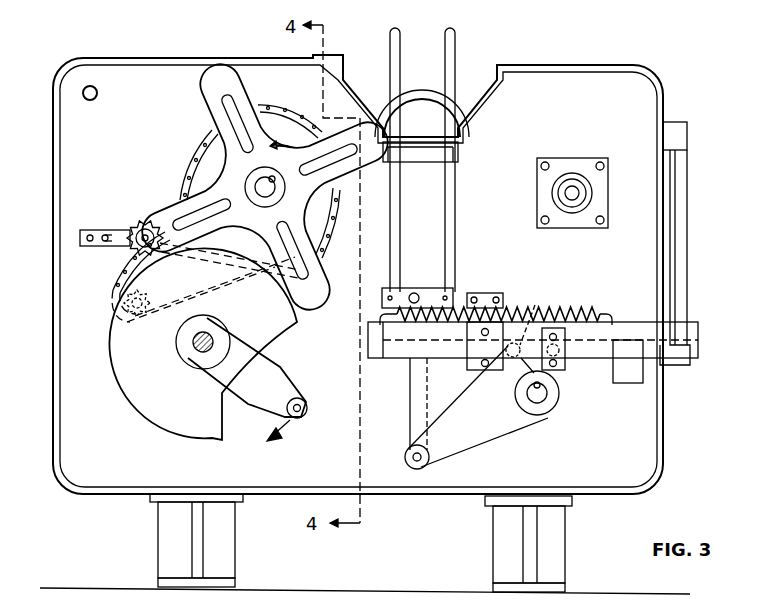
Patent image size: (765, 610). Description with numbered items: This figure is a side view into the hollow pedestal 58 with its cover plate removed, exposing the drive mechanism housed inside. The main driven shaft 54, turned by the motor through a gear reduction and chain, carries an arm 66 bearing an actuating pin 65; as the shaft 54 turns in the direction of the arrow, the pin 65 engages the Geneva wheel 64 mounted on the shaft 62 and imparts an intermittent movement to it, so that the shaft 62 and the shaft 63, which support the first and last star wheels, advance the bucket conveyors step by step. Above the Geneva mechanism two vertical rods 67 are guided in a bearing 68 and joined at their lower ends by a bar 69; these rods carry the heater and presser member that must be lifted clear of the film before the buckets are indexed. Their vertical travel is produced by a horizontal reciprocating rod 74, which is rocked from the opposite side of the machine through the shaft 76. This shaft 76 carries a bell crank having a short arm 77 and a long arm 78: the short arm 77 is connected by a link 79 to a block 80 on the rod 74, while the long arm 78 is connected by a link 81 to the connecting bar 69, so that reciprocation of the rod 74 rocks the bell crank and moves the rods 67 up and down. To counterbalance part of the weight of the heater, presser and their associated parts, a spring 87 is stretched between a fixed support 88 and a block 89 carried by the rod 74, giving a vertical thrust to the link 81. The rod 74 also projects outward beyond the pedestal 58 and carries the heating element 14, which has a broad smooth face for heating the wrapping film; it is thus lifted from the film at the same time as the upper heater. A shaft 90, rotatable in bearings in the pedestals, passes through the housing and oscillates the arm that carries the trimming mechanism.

The heating element 14 is at (677, 140).
The shaft 54 is at (195, 348).
The pedestal 58 is at (127, 60).
The shaft 62 is at (276, 192).
The shaft 63 is at (575, 193).
The Geneva wheel 64 is at (213, 112).
The actuating pin 65 is at (307, 407).
The arm 66 is at (290, 378).
The rods 67 is at (447, 72).
The bearing 68 is at (457, 157).
The bar 69 is at (450, 290).
The reciprocating rod 74 is at (418, 345).
The shaft 76 is at (546, 402).
The short arm 77 is at (518, 362).
The long arm 78 is at (470, 435).
The link 79 is at (533, 315).
The block 80 is at (560, 366).
The link 81 is at (410, 416).
The spring 87 is at (575, 308).
The fixed support 88 is at (610, 306).
The block 89 is at (372, 325).
The shaft 90 is at (83, 93).